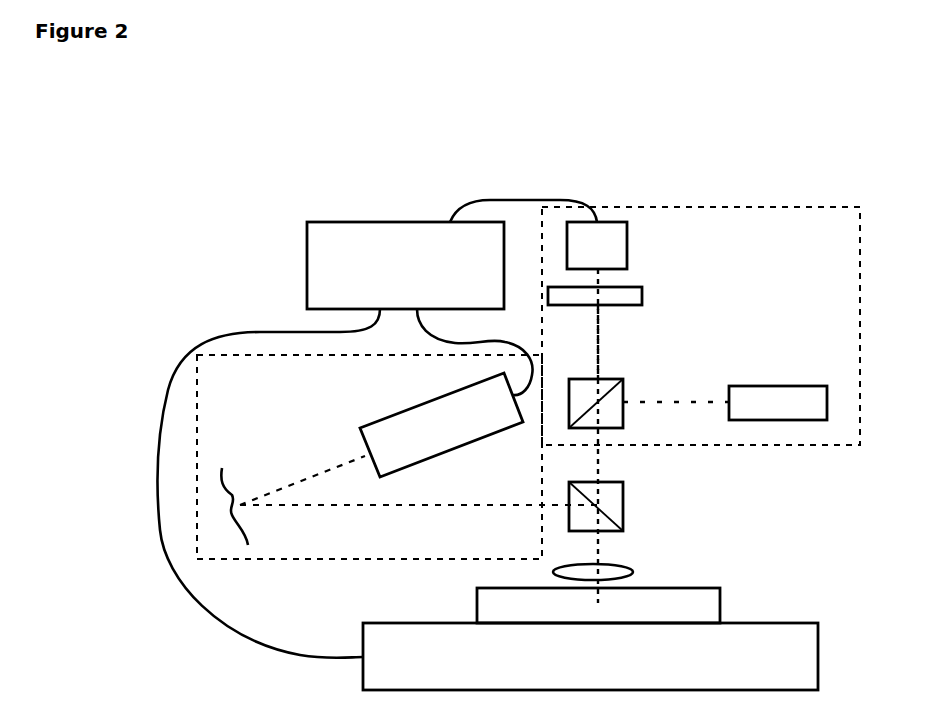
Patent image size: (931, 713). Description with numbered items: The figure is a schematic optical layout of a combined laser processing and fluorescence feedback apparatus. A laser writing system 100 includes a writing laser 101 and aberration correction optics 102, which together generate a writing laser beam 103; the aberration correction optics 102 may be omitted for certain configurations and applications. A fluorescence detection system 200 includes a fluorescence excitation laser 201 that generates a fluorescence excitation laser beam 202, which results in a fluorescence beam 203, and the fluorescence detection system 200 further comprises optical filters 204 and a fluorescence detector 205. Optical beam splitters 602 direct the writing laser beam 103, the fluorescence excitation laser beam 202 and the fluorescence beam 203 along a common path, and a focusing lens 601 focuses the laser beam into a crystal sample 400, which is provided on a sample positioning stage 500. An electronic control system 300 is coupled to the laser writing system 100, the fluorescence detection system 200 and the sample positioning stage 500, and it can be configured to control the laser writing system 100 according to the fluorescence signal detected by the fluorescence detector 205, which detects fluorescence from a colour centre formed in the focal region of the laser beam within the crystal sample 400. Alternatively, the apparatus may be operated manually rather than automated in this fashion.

The laser writing system 100 is at (369, 457).
The writing laser 101 is at (441, 425).
The aberration correction optics 102 is at (229, 510).
The writing laser beam 103 is at (419, 495).
The fluorescence detection system 200 is at (701, 326).
The fluorescence excitation laser 201 is at (778, 403).
The fluorescence excitation laser beam 202 is at (676, 416).
The fluorescence beam 203 is at (619, 342).
The optical filters 204 is at (617, 296).
The fluorescence detector 205 is at (597, 245).
The electronic control system 300 is at (405, 265).
The crystal sample 400 is at (598, 605).
The sample positioning stage 500 is at (590, 656).
The focusing lens 601 is at (612, 572).
The optical beam splitters 602 is at (608, 443).